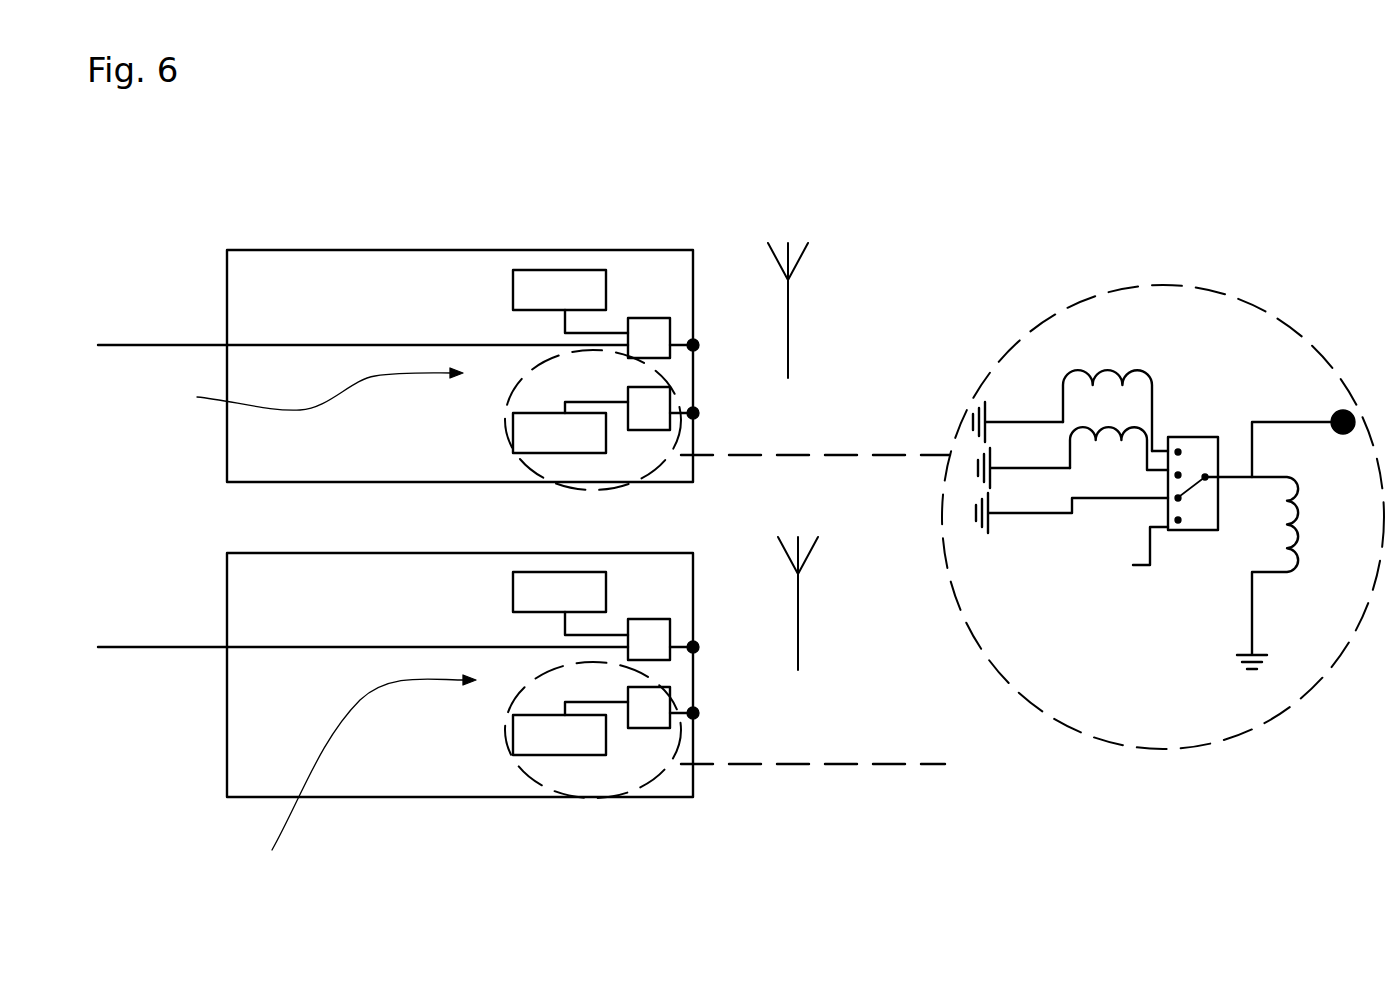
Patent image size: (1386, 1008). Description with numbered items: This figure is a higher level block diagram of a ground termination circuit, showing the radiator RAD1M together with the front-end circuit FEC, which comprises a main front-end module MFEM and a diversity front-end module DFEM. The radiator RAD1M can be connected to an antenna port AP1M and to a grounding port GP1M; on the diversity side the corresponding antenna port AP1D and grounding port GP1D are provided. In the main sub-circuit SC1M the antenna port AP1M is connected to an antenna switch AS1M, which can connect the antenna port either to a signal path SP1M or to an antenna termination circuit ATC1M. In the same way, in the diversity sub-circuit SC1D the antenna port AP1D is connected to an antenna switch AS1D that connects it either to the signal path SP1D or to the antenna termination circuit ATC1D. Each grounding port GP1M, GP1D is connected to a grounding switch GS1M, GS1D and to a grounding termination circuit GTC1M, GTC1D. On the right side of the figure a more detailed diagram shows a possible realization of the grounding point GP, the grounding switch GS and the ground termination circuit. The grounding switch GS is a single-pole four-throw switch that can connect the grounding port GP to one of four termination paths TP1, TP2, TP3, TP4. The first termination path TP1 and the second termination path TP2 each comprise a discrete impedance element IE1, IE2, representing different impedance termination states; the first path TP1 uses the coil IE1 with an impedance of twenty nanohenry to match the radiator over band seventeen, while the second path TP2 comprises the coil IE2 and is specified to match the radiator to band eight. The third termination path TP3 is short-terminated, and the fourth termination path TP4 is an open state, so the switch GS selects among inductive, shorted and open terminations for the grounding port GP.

The front-end circuit FEC is at (266, 186).
The main front-end module MFEM is at (248, 249).
The diversity front-end module DFEM is at (225, 690).
The signal path SP1M is at (405, 345).
The signal path SP1D is at (250, 646).
The antenna termination circuit ATC1M is at (541, 283).
The antenna termination circuit ATC1D is at (533, 588).
The antenna switch AS1M is at (643, 330).
The antenna switch AS1D is at (650, 628).
The antenna port AP1M is at (693, 345).
The antenna port AP1D is at (750, 617).
The radiator RAD1M is at (792, 295).
The sub-circuit SC1M is at (281, 389).
The sub-circuit SC1D is at (351, 781).
The grounding port GP1M is at (693, 413).
The grounding port GP1D is at (693, 713).
The grounding switch GS1M is at (655, 408).
The grounding switch GS1D is at (652, 710).
The grounding termination circuit GTC1M is at (580, 433).
The grounding termination circuit GTC1D is at (557, 737).
The impedance element IE1 is at (1110, 380).
The impedance element IE2 is at (1068, 437).
The first termination path TP1 is at (1161, 450).
The second termination path TP2 is at (1030, 468).
The third termination path TP3 is at (1018, 513).
The fourth termination path TP4 is at (1143, 565).
The grounding switch GS is at (1193, 455).
The grounding point GP is at (1343, 410).